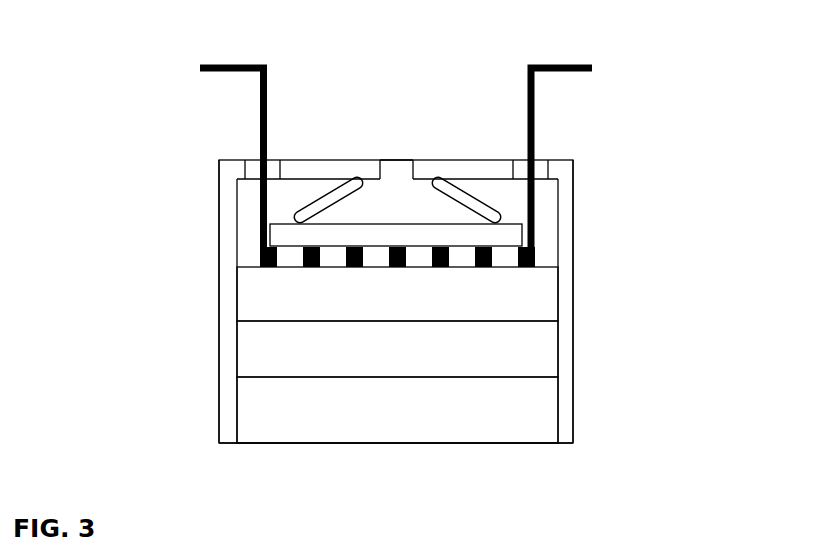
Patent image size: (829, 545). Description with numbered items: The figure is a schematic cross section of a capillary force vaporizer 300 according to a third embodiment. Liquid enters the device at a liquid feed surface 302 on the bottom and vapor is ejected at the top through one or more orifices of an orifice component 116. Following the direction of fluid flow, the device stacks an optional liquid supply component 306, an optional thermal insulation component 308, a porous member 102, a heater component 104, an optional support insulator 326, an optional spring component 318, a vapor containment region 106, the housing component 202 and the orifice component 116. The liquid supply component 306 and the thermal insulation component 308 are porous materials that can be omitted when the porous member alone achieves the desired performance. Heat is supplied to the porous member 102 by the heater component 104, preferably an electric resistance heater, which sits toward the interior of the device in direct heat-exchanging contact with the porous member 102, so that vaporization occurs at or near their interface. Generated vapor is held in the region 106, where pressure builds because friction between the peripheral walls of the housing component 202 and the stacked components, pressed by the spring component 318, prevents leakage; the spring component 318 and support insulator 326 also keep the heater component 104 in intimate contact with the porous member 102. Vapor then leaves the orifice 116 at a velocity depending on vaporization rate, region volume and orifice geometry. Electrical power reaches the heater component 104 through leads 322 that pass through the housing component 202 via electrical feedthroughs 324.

The capillary force vaporizer 300 is at (107, 37).
The porous member 102 is at (270, 287).
The heater component 104 is at (482, 268).
The vapor containment region 106 is at (548, 220).
The orifice component 116 is at (397, 163).
The housing component 202 is at (565, 256).
The liquid feed surface 302 is at (433, 443).
The liquid supply component 306 is at (270, 392).
The thermal insulation component 308 is at (270, 338).
The spring component 318 is at (312, 208).
The leads 322 is at (533, 128).
The electrical feedthroughs 324 is at (540, 168).
The support insulator 326 is at (293, 237).